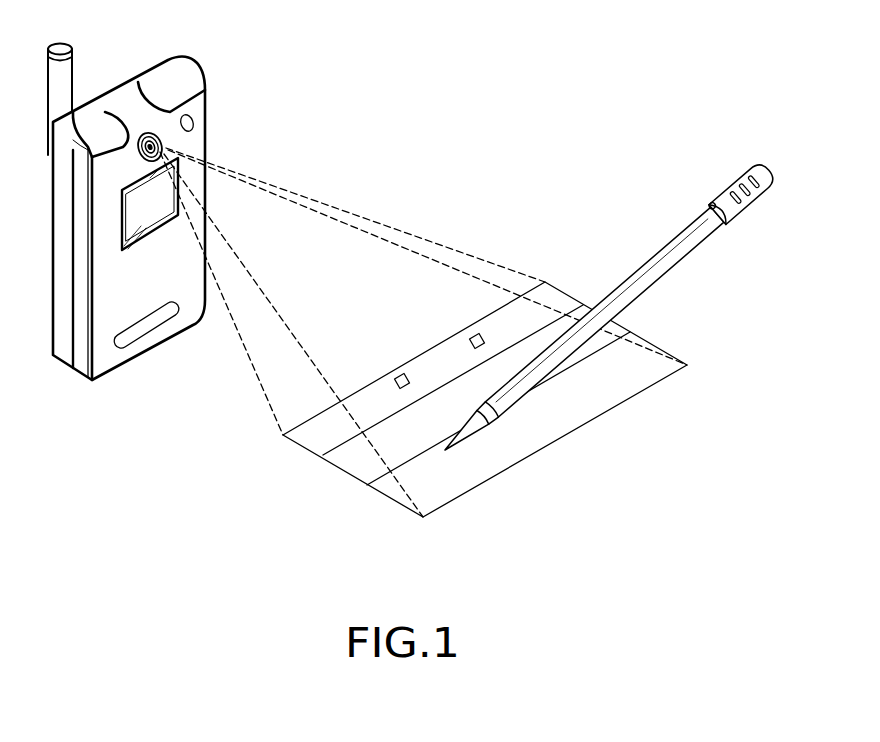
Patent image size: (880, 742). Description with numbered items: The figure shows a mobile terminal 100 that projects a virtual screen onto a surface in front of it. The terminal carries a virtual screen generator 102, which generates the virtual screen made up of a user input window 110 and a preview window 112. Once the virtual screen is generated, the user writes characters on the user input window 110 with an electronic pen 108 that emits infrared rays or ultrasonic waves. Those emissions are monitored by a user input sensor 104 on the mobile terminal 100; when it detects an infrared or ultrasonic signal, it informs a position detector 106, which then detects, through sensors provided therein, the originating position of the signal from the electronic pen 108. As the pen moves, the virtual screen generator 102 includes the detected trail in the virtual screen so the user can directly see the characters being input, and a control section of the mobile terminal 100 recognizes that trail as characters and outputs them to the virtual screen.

The mobile terminal 100 is at (79, 398).
The virtual screen generator 102 is at (148, 132).
The user input sensor 104 is at (194, 118).
The position detector 106 is at (145, 338).
The electronic pen 108 is at (598, 297).
The user input window 110 is at (633, 362).
The preview window 112 is at (355, 462).